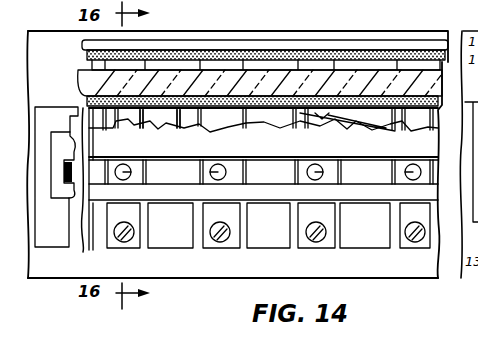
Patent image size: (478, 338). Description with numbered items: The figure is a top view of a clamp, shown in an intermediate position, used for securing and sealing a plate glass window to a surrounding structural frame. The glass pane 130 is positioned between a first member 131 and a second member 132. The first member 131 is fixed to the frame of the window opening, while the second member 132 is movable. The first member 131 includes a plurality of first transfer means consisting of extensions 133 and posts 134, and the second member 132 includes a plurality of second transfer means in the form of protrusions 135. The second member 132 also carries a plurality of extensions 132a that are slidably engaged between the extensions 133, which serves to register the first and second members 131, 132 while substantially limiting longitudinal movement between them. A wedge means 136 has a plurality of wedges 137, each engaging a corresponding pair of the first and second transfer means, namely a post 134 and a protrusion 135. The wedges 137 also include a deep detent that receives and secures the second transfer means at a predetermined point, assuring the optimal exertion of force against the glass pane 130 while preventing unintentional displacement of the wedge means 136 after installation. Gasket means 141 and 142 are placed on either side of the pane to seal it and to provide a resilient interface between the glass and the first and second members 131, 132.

The glass pane 130 is at (88, 88).
The first member 131 is at (273, 9).
The second member 132 is at (268, 114).
The extensions 132a is at (53, 236).
The extensions 133 is at (213, 250).
The posts 134 is at (145, 177).
The protrusions 135 is at (178, 124).
The wedge means 136 is at (373, 156).
The wedges 137 is at (152, 129).
The gasket means 141 is at (373, 52).
The gasket means 142 is at (182, 80).